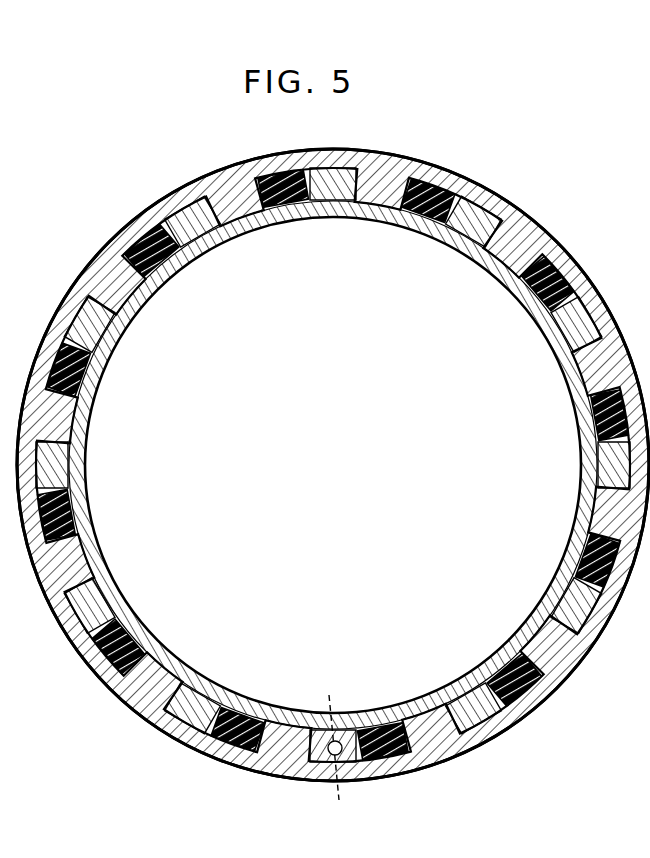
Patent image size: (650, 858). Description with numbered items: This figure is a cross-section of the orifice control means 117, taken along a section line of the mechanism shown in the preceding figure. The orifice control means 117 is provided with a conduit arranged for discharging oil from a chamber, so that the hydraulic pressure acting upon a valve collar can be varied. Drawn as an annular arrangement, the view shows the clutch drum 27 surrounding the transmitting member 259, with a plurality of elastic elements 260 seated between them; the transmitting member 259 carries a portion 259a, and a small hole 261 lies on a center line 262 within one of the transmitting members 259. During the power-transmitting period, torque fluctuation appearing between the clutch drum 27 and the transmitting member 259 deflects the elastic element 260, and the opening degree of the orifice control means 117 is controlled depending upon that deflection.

The orifice control means 117 is at (272, 787).
The clutch drum 27 is at (452, 743).
The transmitting member 259 is at (473, 697).
The inner retaining ring 259a is at (355, 728).
The elastic element 260 is at (530, 690).
The locating hole 261 is at (340, 783).
The center line 262 is at (342, 737).